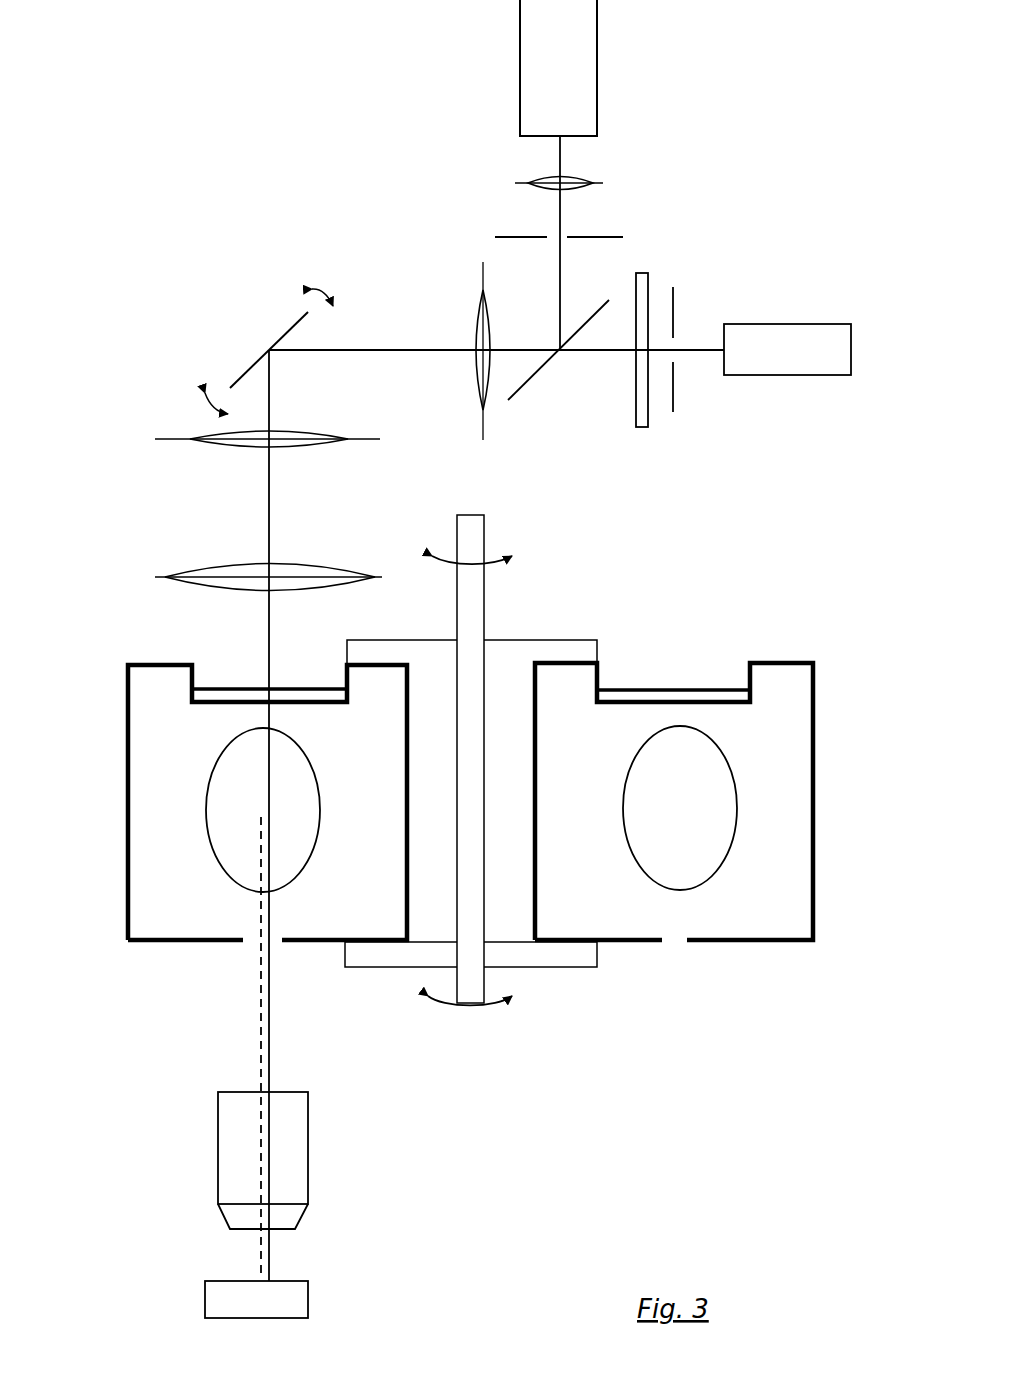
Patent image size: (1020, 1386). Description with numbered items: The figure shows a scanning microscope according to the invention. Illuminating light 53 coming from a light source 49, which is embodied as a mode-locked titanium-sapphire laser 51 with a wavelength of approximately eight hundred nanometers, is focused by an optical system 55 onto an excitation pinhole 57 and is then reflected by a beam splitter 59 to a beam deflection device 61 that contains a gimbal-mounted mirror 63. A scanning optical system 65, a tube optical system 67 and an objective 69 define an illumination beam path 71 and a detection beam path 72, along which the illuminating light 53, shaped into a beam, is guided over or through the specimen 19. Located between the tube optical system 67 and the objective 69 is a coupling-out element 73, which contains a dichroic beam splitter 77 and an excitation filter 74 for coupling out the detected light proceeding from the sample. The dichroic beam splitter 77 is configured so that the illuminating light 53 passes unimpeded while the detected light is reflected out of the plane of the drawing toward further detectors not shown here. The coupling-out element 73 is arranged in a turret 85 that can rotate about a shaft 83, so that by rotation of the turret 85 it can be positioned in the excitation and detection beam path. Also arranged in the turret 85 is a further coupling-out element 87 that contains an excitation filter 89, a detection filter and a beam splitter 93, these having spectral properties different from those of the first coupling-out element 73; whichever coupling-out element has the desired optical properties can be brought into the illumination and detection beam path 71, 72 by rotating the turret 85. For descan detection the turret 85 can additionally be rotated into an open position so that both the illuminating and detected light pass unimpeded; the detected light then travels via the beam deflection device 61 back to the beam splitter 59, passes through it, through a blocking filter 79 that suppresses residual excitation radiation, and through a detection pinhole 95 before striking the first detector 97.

The specimen 19 is at (295, 1305).
The light source 49 is at (628, 48).
The mode-locked titanium-sapphire laser 51 is at (547, 60).
The illuminating light 53 is at (560, 162).
The optical system 55 is at (540, 183).
The excitation pinhole 57 is at (567, 237).
The beam splitter 59 is at (510, 387).
The beam deflection device 61 is at (158, 276).
The gimbal-mounted mirror 63 is at (293, 325).
The scanning optical system 65 is at (240, 440).
The tube optical system 67 is at (207, 565).
The objective 69 is at (281, 1155).
The illumination beam path 71 is at (270, 500).
The detection beam path 72 is at (260, 1013).
The coupling-out element 73 is at (143, 720).
The excitation filter 74 is at (245, 688).
The dichroic beam splitter 77 is at (232, 778).
The blocking filter 79 is at (640, 283).
The shaft 83 is at (473, 537).
The turret 85 is at (538, 650).
The further coupling-out element 87 is at (787, 685).
The excitation filter 89 is at (635, 688).
The beam splitter 93 is at (693, 870).
The detection pinhole 95 is at (677, 363).
The first detector 97 is at (773, 360).